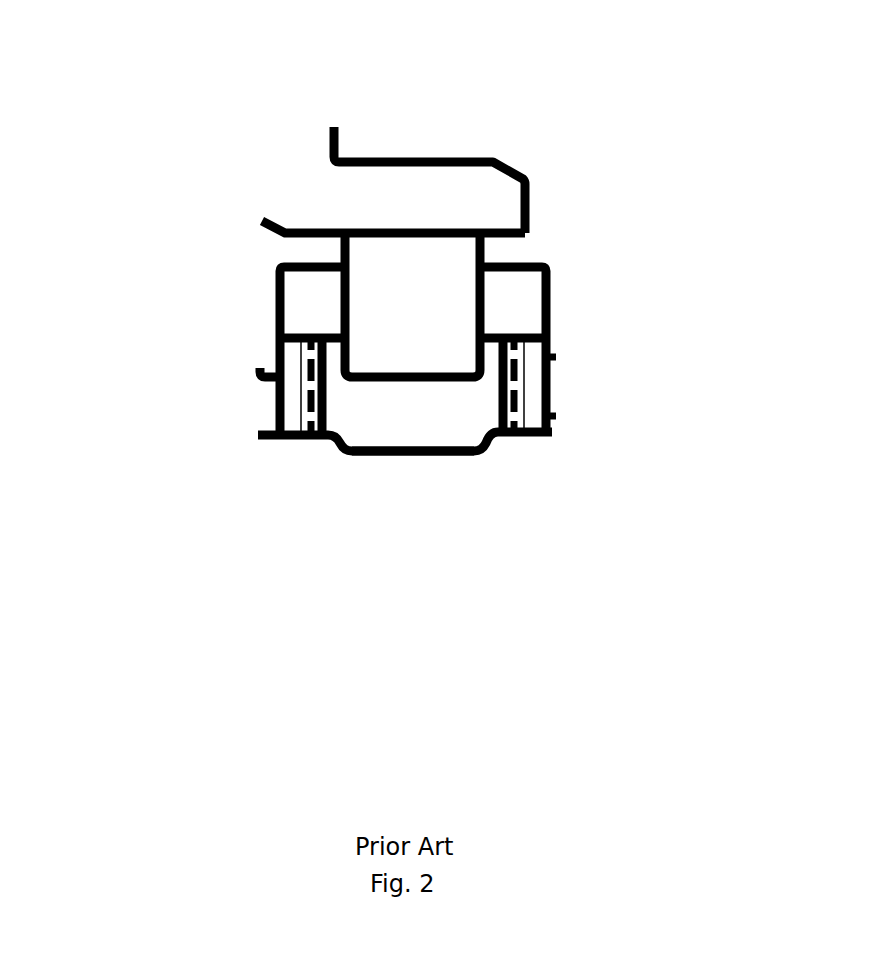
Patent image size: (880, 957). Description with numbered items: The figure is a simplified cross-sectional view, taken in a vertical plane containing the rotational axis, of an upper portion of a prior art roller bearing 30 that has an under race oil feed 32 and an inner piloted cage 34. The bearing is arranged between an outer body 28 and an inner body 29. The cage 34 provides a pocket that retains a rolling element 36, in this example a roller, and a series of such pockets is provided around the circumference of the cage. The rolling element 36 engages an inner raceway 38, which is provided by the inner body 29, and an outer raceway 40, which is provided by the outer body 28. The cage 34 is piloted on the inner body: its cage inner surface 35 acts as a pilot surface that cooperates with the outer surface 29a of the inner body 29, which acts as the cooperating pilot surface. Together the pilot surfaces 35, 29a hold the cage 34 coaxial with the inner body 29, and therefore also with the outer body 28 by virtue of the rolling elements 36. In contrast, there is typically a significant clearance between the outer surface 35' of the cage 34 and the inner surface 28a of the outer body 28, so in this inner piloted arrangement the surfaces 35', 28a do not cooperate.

The outer body 28 is at (500, 187).
The inner surface of the outer body 28a is at (280, 242).
The inner body 29 is at (358, 410).
The outer surface of the inner body 29a is at (311, 386).
The roller bearing 30 is at (243, 323).
The under race oil feed 32 is at (508, 447).
The inner piloted cage 34 is at (515, 296).
The cage inner surface 35 is at (608, 367).
The outer surface of cage 35' is at (213, 350).
The rolling element 36 is at (410, 298).
The inner raceway 38 is at (472, 387).
The outer raceway 40 is at (378, 226).